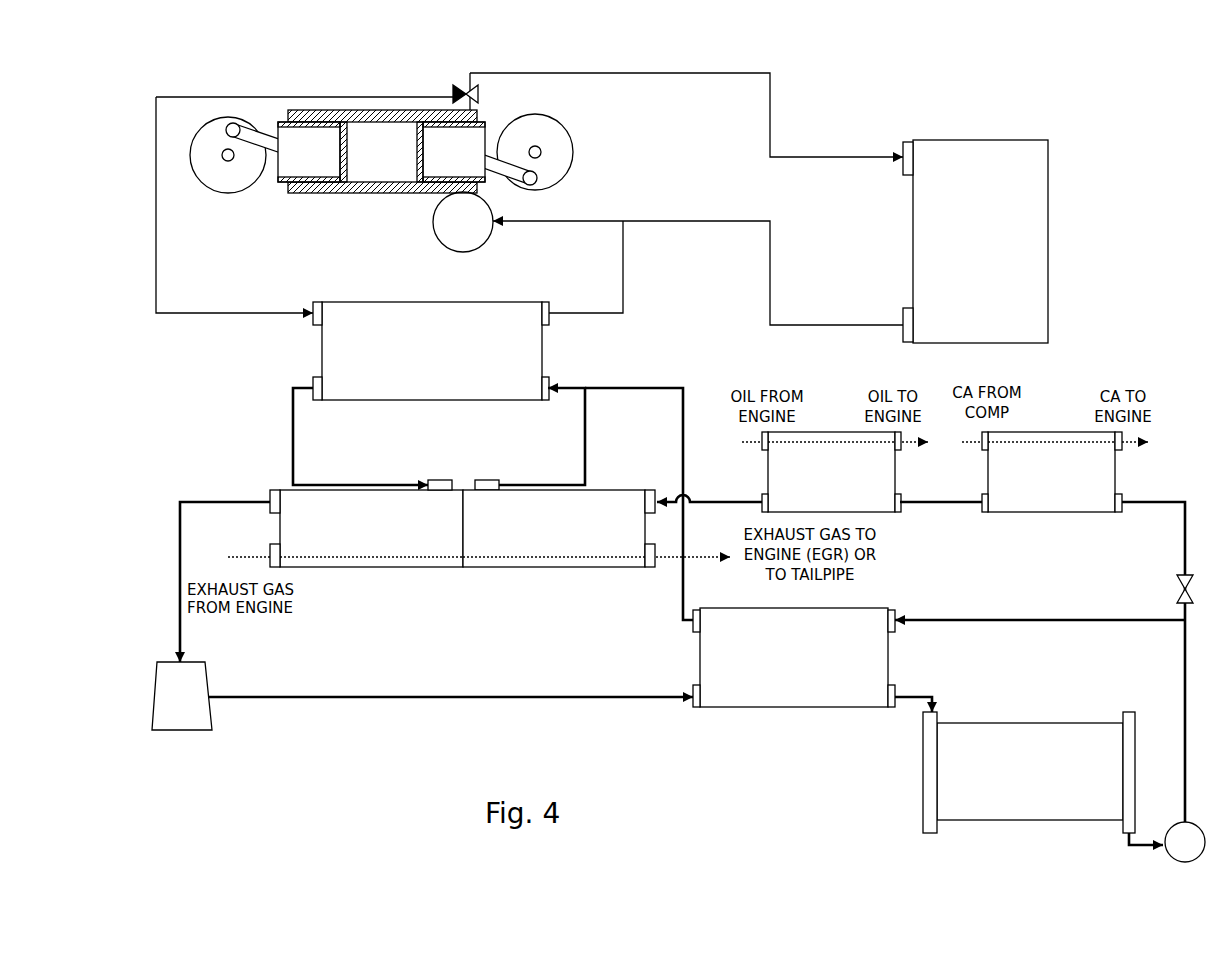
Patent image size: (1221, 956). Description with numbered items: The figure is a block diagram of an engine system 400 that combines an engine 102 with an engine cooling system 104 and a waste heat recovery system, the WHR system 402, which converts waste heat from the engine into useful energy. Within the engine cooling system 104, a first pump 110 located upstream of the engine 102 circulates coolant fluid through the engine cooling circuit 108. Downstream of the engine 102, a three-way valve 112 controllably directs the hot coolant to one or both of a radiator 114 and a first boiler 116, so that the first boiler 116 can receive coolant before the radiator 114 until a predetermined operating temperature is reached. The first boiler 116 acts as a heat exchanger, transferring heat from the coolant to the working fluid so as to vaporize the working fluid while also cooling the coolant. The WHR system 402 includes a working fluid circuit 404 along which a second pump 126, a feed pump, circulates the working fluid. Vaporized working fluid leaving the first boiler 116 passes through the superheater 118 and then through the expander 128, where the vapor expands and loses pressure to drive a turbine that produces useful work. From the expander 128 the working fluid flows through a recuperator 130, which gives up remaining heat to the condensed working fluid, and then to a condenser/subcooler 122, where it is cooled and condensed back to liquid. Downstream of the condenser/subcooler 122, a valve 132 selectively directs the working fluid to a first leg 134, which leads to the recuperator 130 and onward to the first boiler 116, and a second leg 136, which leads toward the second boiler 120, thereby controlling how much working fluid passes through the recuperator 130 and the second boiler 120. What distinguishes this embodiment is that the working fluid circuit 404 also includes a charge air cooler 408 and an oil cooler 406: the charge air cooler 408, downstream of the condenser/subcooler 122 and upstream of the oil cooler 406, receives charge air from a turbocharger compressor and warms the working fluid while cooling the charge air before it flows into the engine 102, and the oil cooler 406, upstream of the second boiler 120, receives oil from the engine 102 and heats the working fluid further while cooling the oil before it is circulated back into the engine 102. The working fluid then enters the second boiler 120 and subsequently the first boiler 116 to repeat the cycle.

The engine 102 is at (352, 193).
The engine cooling system 104 is at (862, 131).
The engine cooling circuit 108 is at (648, 74).
The first pump 110 is at (460, 234).
The three-way valve 112 is at (460, 88).
The radiator 114 is at (975, 241).
The first boiler 116 is at (431, 351).
The superheater 118 is at (384, 523).
The second boiler 120 is at (559, 528).
The condenser/subcooler 122 is at (1029, 772).
The second pump 126 is at (1168, 828).
The expander 128 is at (182, 719).
The recuperator 130 is at (794, 657).
The valve 132 is at (1178, 589).
The first leg 134 is at (982, 617).
The second leg 136 is at (925, 504).
The engine system 400 is at (1126, 149).
The WHR system 402 is at (1148, 369).
The working fluid circuit 404 is at (702, 498).
The oil cooler 406 is at (831, 472).
The charge air cooler 408 is at (1052, 472).